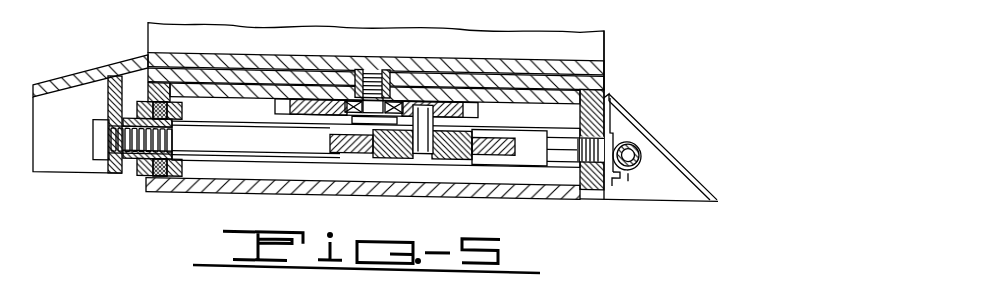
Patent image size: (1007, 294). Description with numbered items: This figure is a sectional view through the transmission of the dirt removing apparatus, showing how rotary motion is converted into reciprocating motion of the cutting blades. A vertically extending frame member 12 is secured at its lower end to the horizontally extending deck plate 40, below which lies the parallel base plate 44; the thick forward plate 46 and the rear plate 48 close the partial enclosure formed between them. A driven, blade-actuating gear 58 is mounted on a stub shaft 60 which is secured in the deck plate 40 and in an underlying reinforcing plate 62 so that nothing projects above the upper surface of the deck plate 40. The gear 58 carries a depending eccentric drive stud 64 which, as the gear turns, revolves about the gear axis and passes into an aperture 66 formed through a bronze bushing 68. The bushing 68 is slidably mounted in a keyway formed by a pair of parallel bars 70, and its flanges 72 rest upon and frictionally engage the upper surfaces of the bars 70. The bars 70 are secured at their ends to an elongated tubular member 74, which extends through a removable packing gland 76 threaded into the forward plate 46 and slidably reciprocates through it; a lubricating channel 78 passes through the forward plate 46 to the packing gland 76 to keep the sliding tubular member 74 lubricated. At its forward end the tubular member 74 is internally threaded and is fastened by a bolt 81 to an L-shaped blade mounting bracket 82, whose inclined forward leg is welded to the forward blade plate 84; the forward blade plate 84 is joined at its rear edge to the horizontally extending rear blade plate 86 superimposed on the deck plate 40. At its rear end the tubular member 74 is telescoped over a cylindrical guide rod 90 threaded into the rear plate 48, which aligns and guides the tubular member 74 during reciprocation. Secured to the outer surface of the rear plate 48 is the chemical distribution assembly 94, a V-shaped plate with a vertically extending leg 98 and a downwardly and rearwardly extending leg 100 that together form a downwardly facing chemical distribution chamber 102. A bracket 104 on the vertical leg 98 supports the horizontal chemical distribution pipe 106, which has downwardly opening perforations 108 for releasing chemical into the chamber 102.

The vertically extending frame member 12 is at (301, 44).
The deck plate 40 is at (580, 63).
The base plate 44 is at (227, 179).
The forward plate 46 is at (147, 77).
The rear plate 48 is at (587, 179).
The driven, blade-actuating gear 58 is at (277, 102).
The stub shaft 60 is at (378, 66).
The reinforcing plate 62 is at (207, 83).
The eccentric drive stud 64 is at (417, 146).
The aperture 66 is at (408, 146).
The bronze bushing 68 is at (463, 152).
The parallel bar 70 is at (332, 139).
The flange 72 is at (365, 125).
The tubular member 74 is at (234, 141).
The packing gland 76 is at (140, 174).
The lubricating channel 78 is at (173, 95).
The bolt 81 is at (102, 140).
The L-shaped blade mounting bracket 82 is at (118, 175).
The forward blade plate 84 is at (64, 76).
The rear blade plate 86 is at (420, 65).
The guide rod 90 is at (565, 130).
The chemical distribution assembly 94 is at (660, 120).
The vertically extending leg 98 is at (615, 109).
The downwardly and rearwardly extending leg 100 is at (697, 160).
The chemical distribution chamber 102 is at (679, 180).
The bracket 104 is at (615, 129).
The chemical distribution pipe 106 is at (640, 144).
The perforation 108 is at (628, 170).